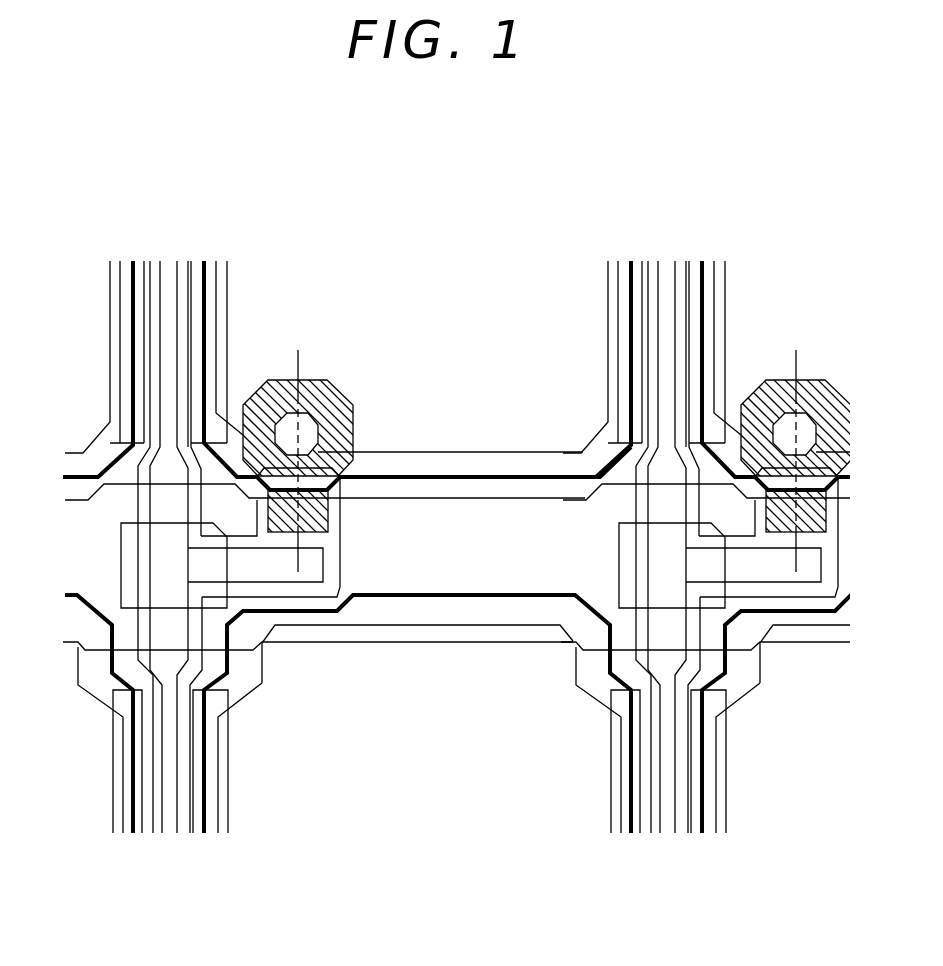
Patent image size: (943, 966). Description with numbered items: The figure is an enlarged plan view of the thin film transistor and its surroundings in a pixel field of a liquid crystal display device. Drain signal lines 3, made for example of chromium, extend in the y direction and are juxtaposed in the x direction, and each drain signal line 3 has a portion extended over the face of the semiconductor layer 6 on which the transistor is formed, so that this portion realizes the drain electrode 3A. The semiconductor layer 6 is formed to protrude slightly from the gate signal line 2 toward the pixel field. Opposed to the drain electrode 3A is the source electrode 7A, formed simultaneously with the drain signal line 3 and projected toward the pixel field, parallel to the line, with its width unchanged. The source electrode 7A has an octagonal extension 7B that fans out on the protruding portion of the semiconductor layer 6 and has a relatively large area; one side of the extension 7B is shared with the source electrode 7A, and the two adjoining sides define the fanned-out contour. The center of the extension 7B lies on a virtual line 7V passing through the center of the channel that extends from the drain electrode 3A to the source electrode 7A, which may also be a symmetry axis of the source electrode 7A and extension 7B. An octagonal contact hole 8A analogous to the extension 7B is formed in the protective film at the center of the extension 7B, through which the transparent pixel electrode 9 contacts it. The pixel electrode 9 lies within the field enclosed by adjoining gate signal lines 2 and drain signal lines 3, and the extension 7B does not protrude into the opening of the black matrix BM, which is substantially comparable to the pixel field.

The gate signal line 2 is at (65, 500).
The drain signal line 3 is at (191, 263).
The drain electrode 3A is at (280, 583).
The semiconductor layer 6 is at (340, 560).
The source electrode 7A is at (330, 514).
The extension of the source electrode 7B is at (353, 427).
The virtual line 7V is at (298, 350).
The contact hole 8A is at (313, 420).
The pixel electrode 9 is at (630, 267).
The black matrix BM is at (617, 267).